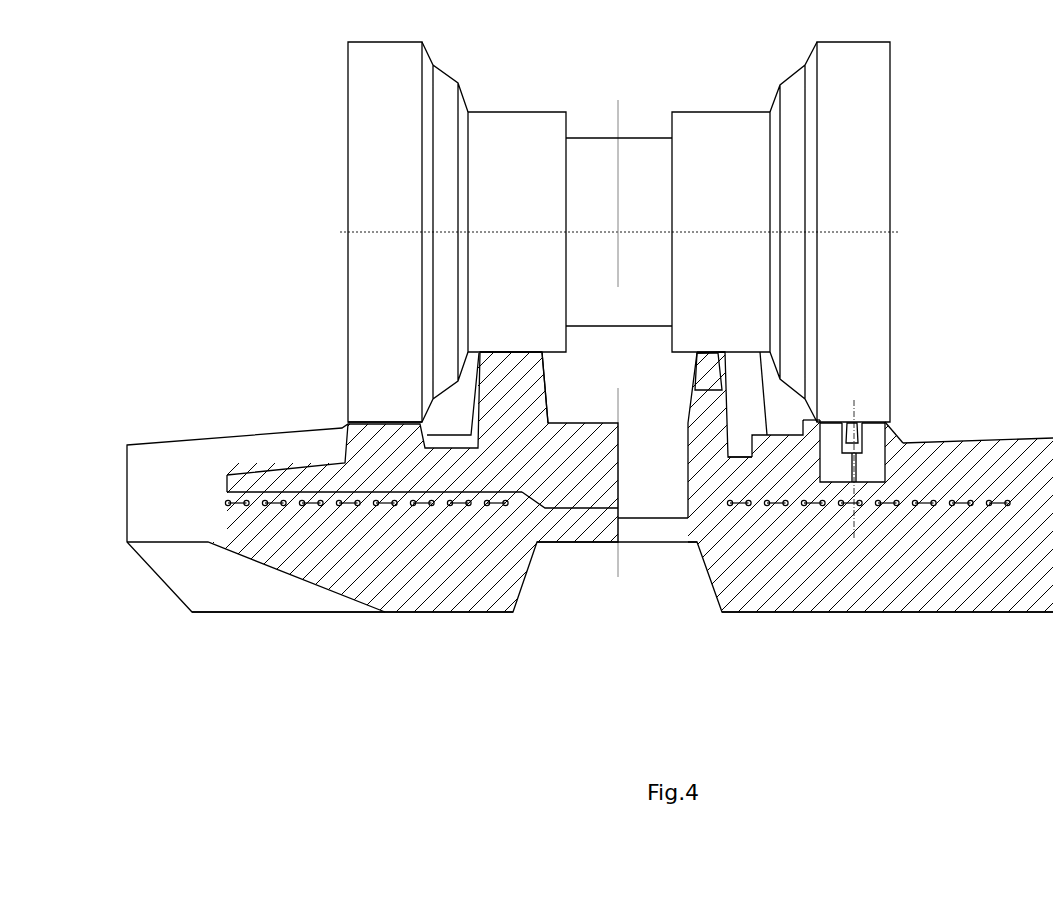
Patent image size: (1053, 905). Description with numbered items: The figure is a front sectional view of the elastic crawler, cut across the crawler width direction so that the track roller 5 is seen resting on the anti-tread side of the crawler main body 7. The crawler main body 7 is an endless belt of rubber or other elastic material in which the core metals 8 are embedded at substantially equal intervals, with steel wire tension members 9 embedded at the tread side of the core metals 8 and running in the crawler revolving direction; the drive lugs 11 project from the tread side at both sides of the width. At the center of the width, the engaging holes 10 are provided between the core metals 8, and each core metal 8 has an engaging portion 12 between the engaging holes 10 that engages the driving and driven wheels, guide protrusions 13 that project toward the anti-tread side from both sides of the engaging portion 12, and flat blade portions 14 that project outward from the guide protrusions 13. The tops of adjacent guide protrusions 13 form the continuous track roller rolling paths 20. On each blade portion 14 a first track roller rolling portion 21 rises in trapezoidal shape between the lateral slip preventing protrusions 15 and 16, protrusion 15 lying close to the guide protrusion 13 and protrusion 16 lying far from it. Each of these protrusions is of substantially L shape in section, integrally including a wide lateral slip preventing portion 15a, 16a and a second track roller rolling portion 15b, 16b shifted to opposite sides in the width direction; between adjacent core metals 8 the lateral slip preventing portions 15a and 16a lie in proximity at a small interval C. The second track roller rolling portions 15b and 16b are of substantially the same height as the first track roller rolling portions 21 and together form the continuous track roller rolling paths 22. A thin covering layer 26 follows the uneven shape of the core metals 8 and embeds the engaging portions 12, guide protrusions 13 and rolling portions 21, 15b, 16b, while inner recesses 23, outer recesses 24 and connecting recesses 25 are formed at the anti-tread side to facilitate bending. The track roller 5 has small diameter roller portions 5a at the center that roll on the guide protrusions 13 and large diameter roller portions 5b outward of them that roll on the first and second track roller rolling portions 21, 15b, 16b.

The track roller 5 is at (333, 82).
The small diameter roller portion 5a is at (523, 135).
The large diameter roller portion 5b is at (385, 180).
The crawler main body 7 is at (245, 408).
The core metal 8 is at (588, 510).
The tension member 9 is at (317, 508).
The engaging hole 10 is at (648, 500).
The drive lug 11 is at (440, 587).
The engaging portion 12 is at (585, 447).
The guide protrusion 13 is at (545, 375).
The blade portion 14 is at (283, 480).
The lateral slip preventing protrusion 15 is at (812, 467).
The lateral slip preventing portion 15a is at (820, 483).
The second track roller rolling portion 15b is at (815, 436).
The lateral slip preventing protrusion 16 is at (885, 453).
The lateral slip preventing portion 16a is at (882, 472).
The second track roller rolling portion 16b is at (888, 430).
The track roller rolling path 20 is at (510, 350).
The first track roller rolling portion 21 is at (350, 427).
The track roller rolling path 22 is at (365, 418).
The inner recess 23 is at (750, 450).
The outer recess 24 is at (1000, 440).
The connecting recess 25 is at (855, 420).
The covering layer 26 is at (473, 425).
The small interval C is at (852, 484).